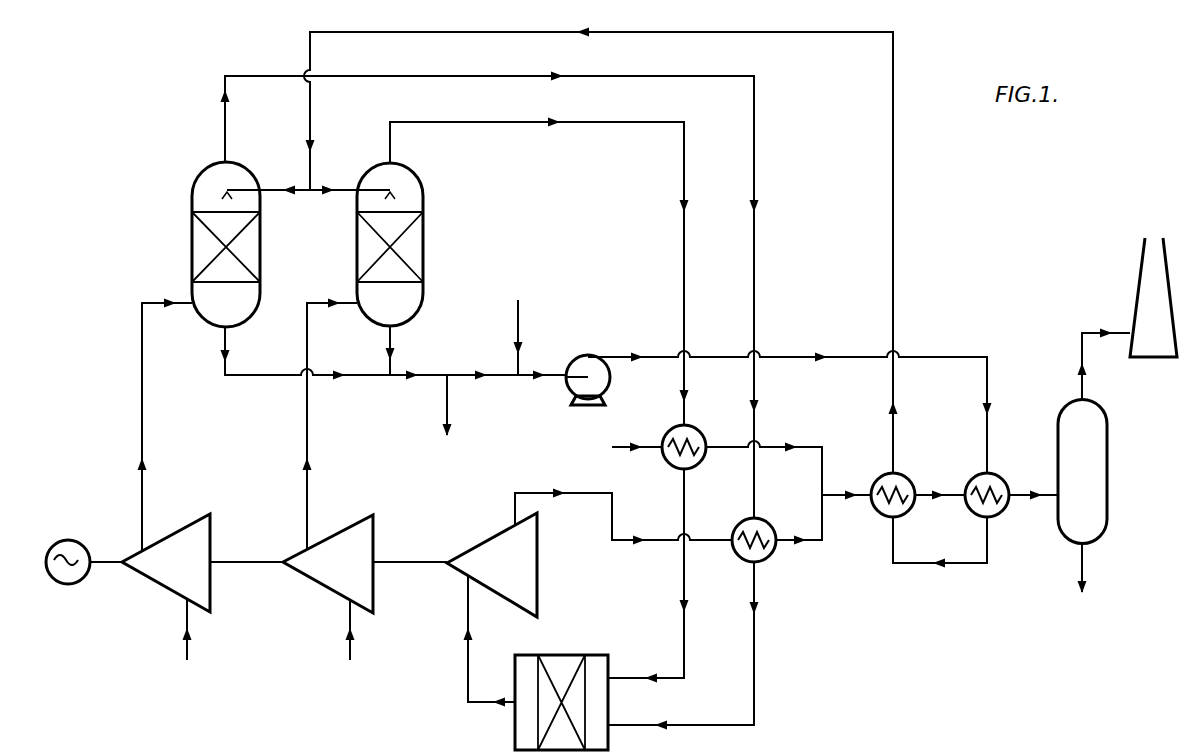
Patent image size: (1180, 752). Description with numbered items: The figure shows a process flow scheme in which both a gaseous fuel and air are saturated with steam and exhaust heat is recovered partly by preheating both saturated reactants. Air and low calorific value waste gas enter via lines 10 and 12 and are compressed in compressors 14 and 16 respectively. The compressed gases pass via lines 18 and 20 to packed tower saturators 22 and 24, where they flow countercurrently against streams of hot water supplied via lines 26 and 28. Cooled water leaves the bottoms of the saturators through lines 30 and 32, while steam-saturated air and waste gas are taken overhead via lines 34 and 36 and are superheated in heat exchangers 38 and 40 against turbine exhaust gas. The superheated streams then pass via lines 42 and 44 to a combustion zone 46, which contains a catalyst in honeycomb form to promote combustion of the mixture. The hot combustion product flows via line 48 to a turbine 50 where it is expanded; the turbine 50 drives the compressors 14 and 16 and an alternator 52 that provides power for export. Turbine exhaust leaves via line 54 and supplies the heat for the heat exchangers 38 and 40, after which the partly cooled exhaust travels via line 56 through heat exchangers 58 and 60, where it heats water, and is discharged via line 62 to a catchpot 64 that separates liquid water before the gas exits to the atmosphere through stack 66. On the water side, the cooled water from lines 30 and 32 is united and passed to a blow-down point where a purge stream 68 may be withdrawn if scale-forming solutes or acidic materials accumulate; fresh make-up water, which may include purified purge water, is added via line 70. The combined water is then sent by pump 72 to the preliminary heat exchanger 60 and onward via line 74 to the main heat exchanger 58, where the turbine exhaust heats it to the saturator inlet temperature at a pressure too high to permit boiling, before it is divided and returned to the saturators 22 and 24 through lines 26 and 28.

The air feed line 10 is at (352, 645).
The waste gas feed line 12 is at (189, 645).
The air compressor 14 is at (326, 592).
The waste gas compressor 16 is at (156, 592).
The compressed air line 18 is at (309, 436).
The compressed waste gas line 20 is at (144, 437).
The air saturator 22 is at (425, 246).
The waste gas saturator 24 is at (262, 250).
The hot water supply line to saturator 22 26 is at (325, 186).
The hot water supply line to saturator 24 28 is at (279, 188).
The cooled water line from saturator 22 30 is at (392, 358).
The cooled water line from saturator 24 32 is at (222, 353).
The saturated air overhead line 34 is at (470, 118).
The saturated waste gas overhead line 36 is at (414, 72).
The heat exchanger 38 is at (670, 425).
The heat exchanger 40 is at (764, 518).
The superheated air line 42 is at (682, 606).
The superheated waste gas line 44 is at (706, 722).
The combustion zone 46 is at (590, 633).
The hot combustion gas line 48 is at (466, 690).
The turbine 50 is at (492, 536).
The alternator 52 is at (86, 545).
The turbine exhaust line 54 is at (573, 488).
The partly cooled exhaust line 56 is at (840, 492).
The main heat exchanger 58 is at (908, 475).
The preliminary heat exchanger 60 is at (998, 474).
The exhaust discharge line 62 is at (1028, 492).
The catchpot 64 is at (1108, 457).
The stack 66 is at (1138, 272).
The purge stream 68 is at (449, 410).
The make-up water line 70 is at (520, 323).
The pump 72 is at (593, 352).
The water line 74 is at (905, 570).